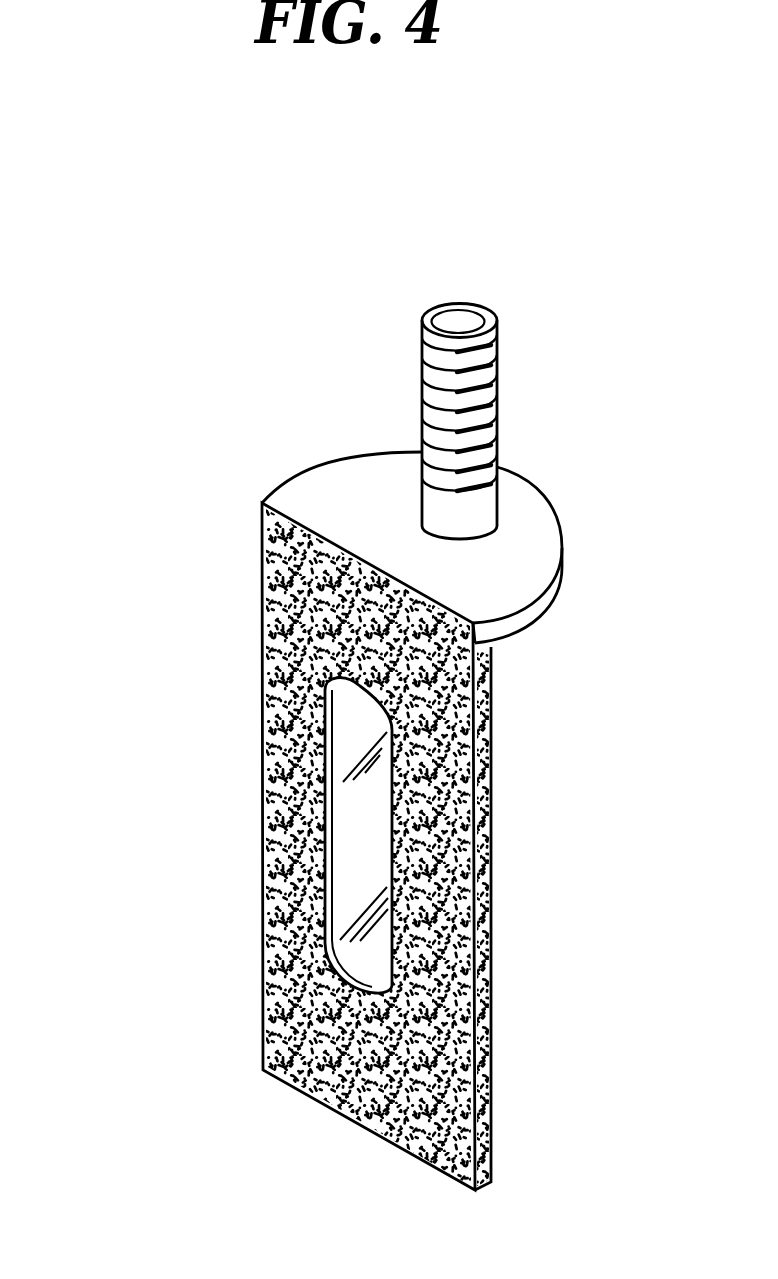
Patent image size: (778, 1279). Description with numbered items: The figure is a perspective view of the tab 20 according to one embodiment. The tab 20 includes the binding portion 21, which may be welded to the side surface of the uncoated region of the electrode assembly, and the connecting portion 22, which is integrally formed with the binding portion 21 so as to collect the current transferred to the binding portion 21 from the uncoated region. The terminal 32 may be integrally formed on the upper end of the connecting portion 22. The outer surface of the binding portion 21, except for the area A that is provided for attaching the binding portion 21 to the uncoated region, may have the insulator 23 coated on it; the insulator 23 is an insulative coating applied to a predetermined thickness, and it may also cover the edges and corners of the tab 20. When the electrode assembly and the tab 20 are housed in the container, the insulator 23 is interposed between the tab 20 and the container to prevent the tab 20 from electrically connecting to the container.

The tab 20 is at (183, 596).
The binding portion 21 is at (490, 900).
The connecting portion 22 is at (548, 547).
The insulator 23 is at (302, 1024).
The terminal 32 is at (497, 396).
The area A is at (350, 832).